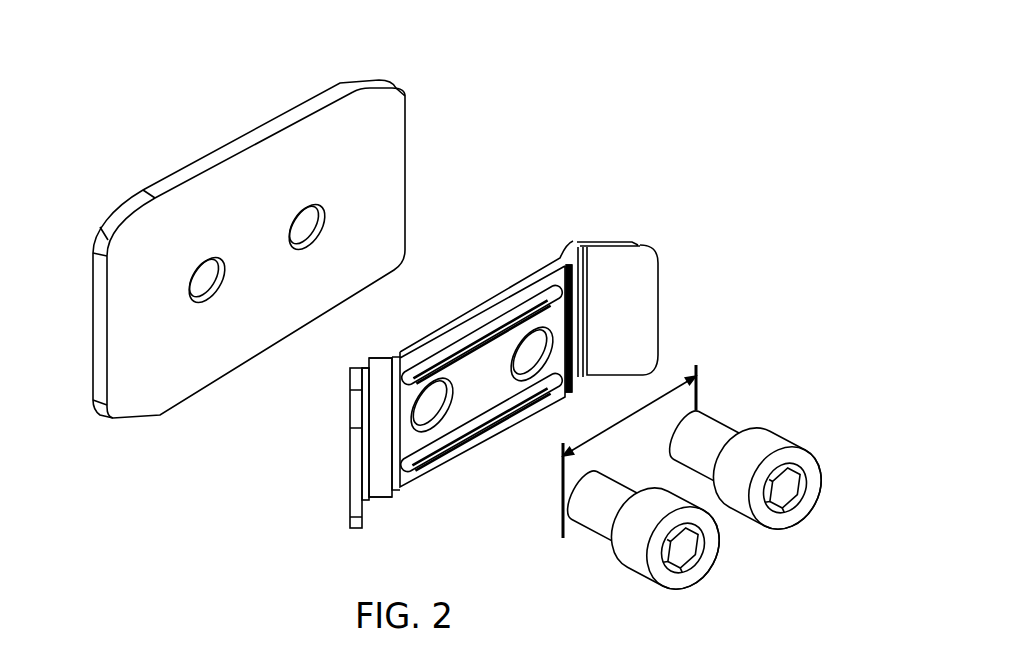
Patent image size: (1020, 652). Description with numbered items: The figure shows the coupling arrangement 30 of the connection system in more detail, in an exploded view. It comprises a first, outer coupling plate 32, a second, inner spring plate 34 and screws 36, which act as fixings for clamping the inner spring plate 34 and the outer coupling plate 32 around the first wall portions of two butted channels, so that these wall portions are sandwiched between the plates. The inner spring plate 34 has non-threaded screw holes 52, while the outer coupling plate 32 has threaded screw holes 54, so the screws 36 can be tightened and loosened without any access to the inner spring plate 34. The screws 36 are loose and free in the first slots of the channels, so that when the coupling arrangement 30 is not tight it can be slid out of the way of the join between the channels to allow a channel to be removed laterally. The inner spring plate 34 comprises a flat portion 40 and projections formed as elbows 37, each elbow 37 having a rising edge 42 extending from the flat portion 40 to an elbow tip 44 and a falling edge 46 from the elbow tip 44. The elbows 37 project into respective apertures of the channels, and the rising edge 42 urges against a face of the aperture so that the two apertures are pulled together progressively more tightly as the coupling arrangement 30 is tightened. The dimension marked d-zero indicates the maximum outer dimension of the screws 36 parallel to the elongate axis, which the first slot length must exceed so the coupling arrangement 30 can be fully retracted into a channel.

The coupling arrangement 30 is at (752, 97).
The outer coupling plate 32 is at (416, 175).
The inner spring plate 34 is at (697, 265).
The screws 36 is at (783, 445).
The elbow 37 is at (606, 215).
The flat portion 40 is at (495, 445).
The rising edge 42 is at (567, 252).
The elbow tip 44 is at (570, 240).
The falling edge 46 is at (640, 243).
The non-threaded screw holes 52 is at (442, 378).
The threaded screw holes 54 is at (293, 230).